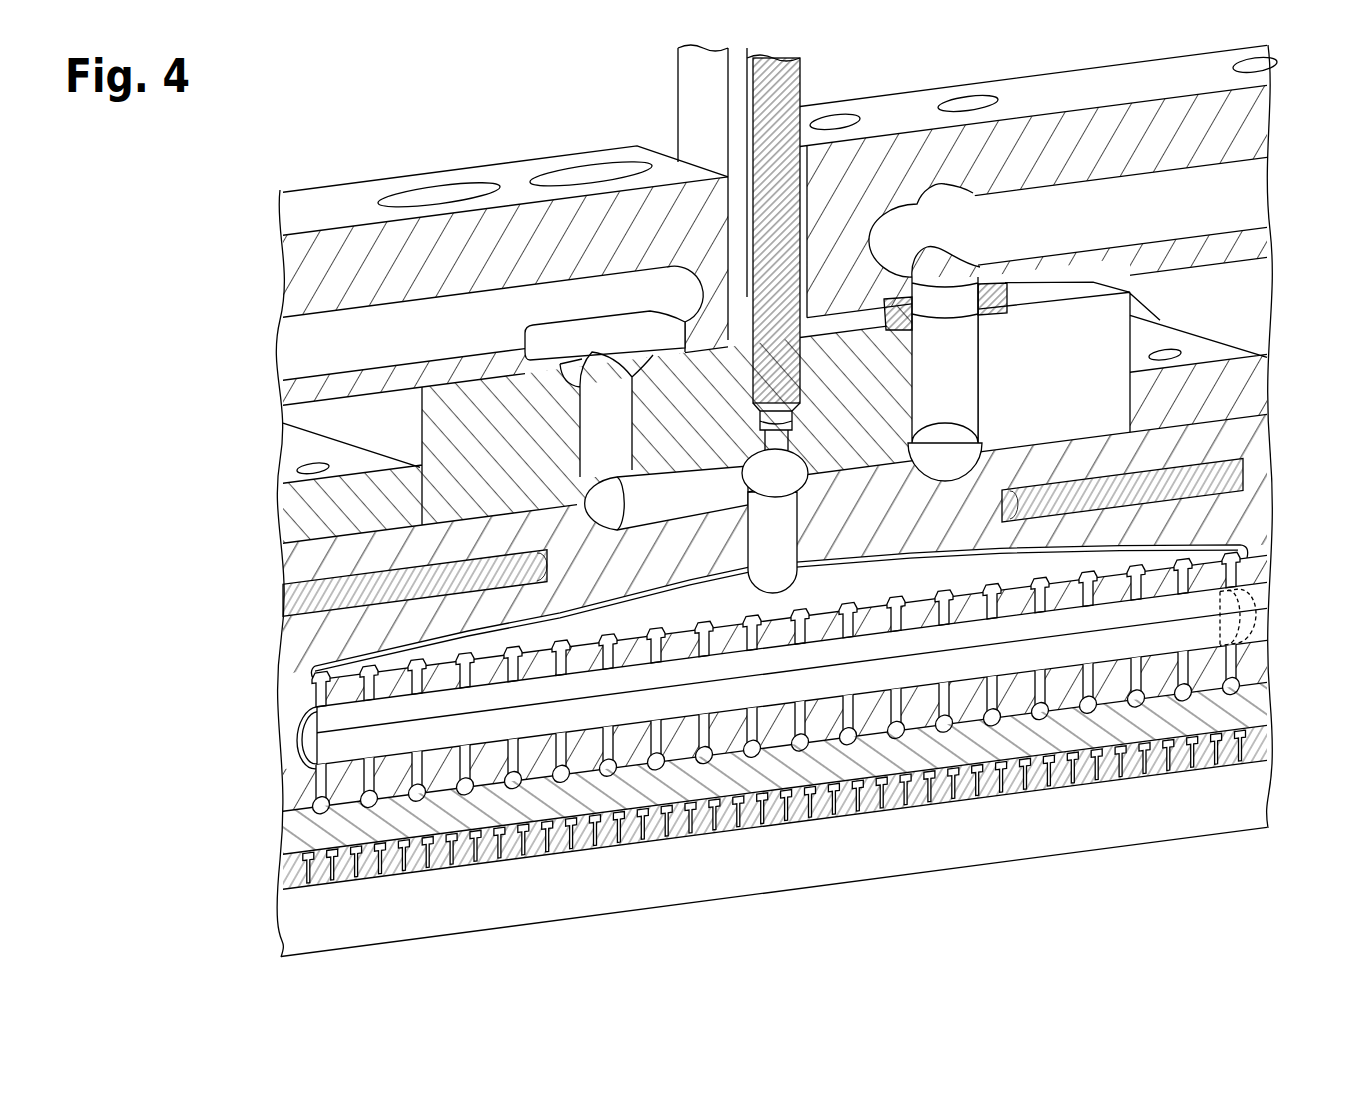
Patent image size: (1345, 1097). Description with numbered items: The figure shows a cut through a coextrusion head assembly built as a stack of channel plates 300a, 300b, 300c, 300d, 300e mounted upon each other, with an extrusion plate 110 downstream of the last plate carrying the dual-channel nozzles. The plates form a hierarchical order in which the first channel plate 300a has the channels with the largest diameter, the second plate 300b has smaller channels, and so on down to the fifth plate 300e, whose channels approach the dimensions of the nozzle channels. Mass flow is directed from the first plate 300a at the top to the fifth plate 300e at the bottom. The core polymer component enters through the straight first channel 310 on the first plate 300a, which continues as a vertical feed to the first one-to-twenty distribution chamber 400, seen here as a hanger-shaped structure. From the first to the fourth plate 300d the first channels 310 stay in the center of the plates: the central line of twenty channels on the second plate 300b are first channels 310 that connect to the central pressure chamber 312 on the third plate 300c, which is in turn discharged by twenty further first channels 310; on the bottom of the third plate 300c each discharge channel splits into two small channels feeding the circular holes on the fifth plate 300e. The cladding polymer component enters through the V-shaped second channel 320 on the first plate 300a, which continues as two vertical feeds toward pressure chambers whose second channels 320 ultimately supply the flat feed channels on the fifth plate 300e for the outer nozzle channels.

The extrusion plate 110 is at (860, 867).
The first channel plate 300a is at (272, 553).
The second channel plate 300b is at (272, 690).
The third channel plate 300c is at (272, 752).
The fourth channel plate 300d is at (272, 818).
The fifth channel plate 300e is at (272, 853).
The first channel 310 is at (630, 446).
The central pressure chamber 312 is at (800, 694).
The second channel 320 is at (967, 396).
The first 1:20 distribution chamber 400 is at (860, 601).